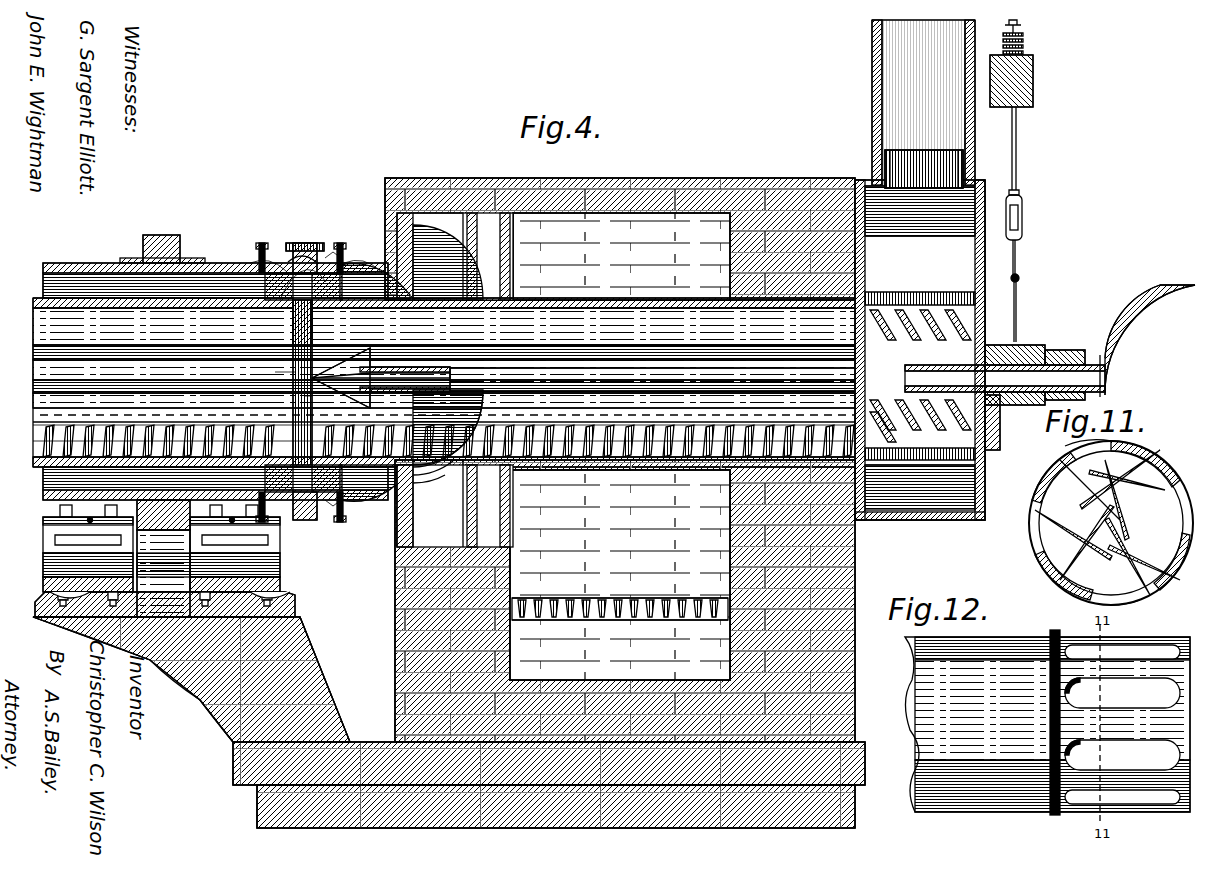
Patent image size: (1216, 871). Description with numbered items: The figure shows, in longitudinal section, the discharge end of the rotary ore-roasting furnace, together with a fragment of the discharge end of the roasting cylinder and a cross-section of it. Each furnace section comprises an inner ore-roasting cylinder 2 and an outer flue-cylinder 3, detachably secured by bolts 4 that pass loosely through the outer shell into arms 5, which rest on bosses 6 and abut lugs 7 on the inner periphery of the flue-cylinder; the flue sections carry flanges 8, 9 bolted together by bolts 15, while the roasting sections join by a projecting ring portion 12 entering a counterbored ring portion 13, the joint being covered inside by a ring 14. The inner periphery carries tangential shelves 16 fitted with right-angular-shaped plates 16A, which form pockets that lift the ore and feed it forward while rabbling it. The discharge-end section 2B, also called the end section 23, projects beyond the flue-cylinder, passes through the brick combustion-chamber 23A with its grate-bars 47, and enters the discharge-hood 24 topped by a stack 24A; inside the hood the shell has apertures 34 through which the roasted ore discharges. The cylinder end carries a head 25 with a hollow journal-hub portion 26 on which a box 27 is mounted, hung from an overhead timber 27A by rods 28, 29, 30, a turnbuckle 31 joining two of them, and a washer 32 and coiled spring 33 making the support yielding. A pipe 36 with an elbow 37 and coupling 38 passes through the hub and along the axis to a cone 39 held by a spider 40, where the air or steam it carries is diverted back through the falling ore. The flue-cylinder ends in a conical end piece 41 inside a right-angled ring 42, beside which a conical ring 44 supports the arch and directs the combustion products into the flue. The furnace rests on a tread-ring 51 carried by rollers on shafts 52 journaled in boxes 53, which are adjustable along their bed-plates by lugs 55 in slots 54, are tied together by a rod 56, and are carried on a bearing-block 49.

In FIG. 4, the ore-roasting cylinder 2 is at (33, 300).
In FIG. 4, the discharge-end section 2B is at (507, 338).
In FIG. 4, the flue-cylinder 3 is at (220, 264).
In FIG. 4, the bolts 4 is at (290, 528).
In FIG. 4, the arms 5 is at (276, 302).
In FIG. 4, the bosses 6 is at (290, 258).
In FIG. 4, the lugs 7 is at (260, 264).
In FIG. 4, the flange 8 is at (313, 244).
In FIG. 4, the flange 9 is at (305, 243).
In FIG. 4, the projecting ring portion 12 is at (335, 305).
In FIG. 4, the counterbored ring portion 13 is at (284, 305).
In FIG. 4, the ring 14 is at (275, 373).
In FIG. 4, the bolts 15 is at (330, 528).
In FIG. 4, the shelves 16 is at (752, 350).
In FIG. 11, the shelves 16 is at (1067, 511).
In FIG. 4, the right-angular-shaped plates 16A is at (42, 444).
In FIG. 4, the end section 23 is at (614, 310).
In FIG. 11, the end section 23 is at (1017, 501).
In FIG. 12, the end section 23 is at (1047, 722).
In FIG. 4, the combustion-chamber 23A is at (662, 180).
In FIG. 4, the discharge-hood 24 is at (920, 350).
In FIG. 4, the stack 24A is at (870, 124).
In FIG. 4, the head 25 is at (1000, 426).
In FIG. 4, the journal-hub portion 26 is at (1040, 346).
In FIG. 4, the box 27 is at (1020, 347).
In FIG. 4, the overhead timber 27A is at (1033, 78).
In FIG. 4, the rod 28 is at (1016, 294).
In FIG. 4, the rod 29 is at (1015, 255).
In FIG. 4, the rod 30 is at (1016, 127).
In FIG. 4, the turnbuckle 31 is at (1022, 213).
In FIG. 4, the washer 32 is at (1021, 26).
In FIG. 4, the coiled spring 33 is at (1023, 43).
In FIG. 4, the apertures 34 is at (855, 332).
In FIG. 11, the apertures 34 is at (1152, 455).
In FIG. 12, the apertures 34 is at (1122, 724).
In FIG. 4, the pipe 36 is at (630, 362).
In FIG. 4, the elbow 37 is at (1160, 303).
In FIG. 4, the coupling 38 is at (1082, 350).
In FIG. 4, the cone 39 is at (304, 396).
In FIG. 4, the spider 40 is at (356, 400).
In FIG. 4, the conical end piece 41 is at (384, 263).
In FIG. 4, the right-angled ring 42 is at (397, 226).
In FIG. 4, the conical ring 44 is at (494, 186).
In FIG. 4, the grate-bars 47 is at (594, 598).
In FIG. 4, the bearing-block 49 is at (293, 599).
In FIG. 4, the tread-ring 51 is at (162, 237).
In FIG. 4, the shafts 52 is at (44, 565).
In FIG. 4, the boxes 53 is at (48, 531).
In FIG. 4, the slots 54 is at (43, 594).
In FIG. 4, the lugs 55 is at (40, 614).
In FIG. 4, the rod 56 is at (159, 521).